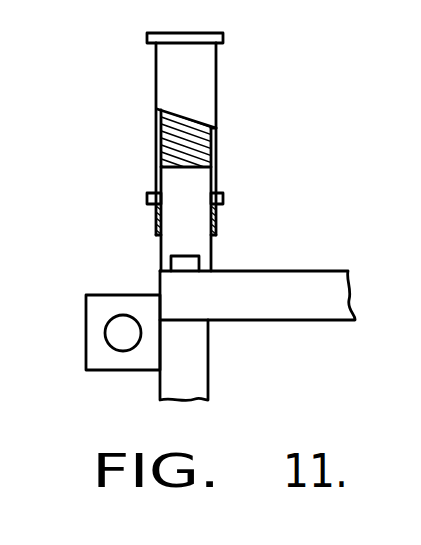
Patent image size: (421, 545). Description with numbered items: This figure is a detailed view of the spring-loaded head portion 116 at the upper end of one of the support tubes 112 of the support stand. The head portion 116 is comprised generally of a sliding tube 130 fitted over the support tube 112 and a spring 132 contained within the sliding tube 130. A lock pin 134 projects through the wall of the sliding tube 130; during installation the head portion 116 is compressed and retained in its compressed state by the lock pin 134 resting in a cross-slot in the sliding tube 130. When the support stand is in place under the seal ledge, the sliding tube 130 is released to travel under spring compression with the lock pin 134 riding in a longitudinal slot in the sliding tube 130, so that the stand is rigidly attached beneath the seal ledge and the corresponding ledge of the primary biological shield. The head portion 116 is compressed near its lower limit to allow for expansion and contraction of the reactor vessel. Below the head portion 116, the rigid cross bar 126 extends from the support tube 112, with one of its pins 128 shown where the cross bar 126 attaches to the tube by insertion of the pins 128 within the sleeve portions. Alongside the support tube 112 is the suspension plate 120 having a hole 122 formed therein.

The spring-loaded head portion 116 is at (240, 83).
The sliding tube 130 is at (170, 85).
The spring 132 is at (167, 135).
The lock pin 134 is at (224, 198).
The pins 128 is at (190, 261).
The rigid cross bar 126 is at (238, 305).
The suspension plate 120 is at (102, 305).
The hole 122 is at (120, 345).
The support tubes 112 is at (195, 372).